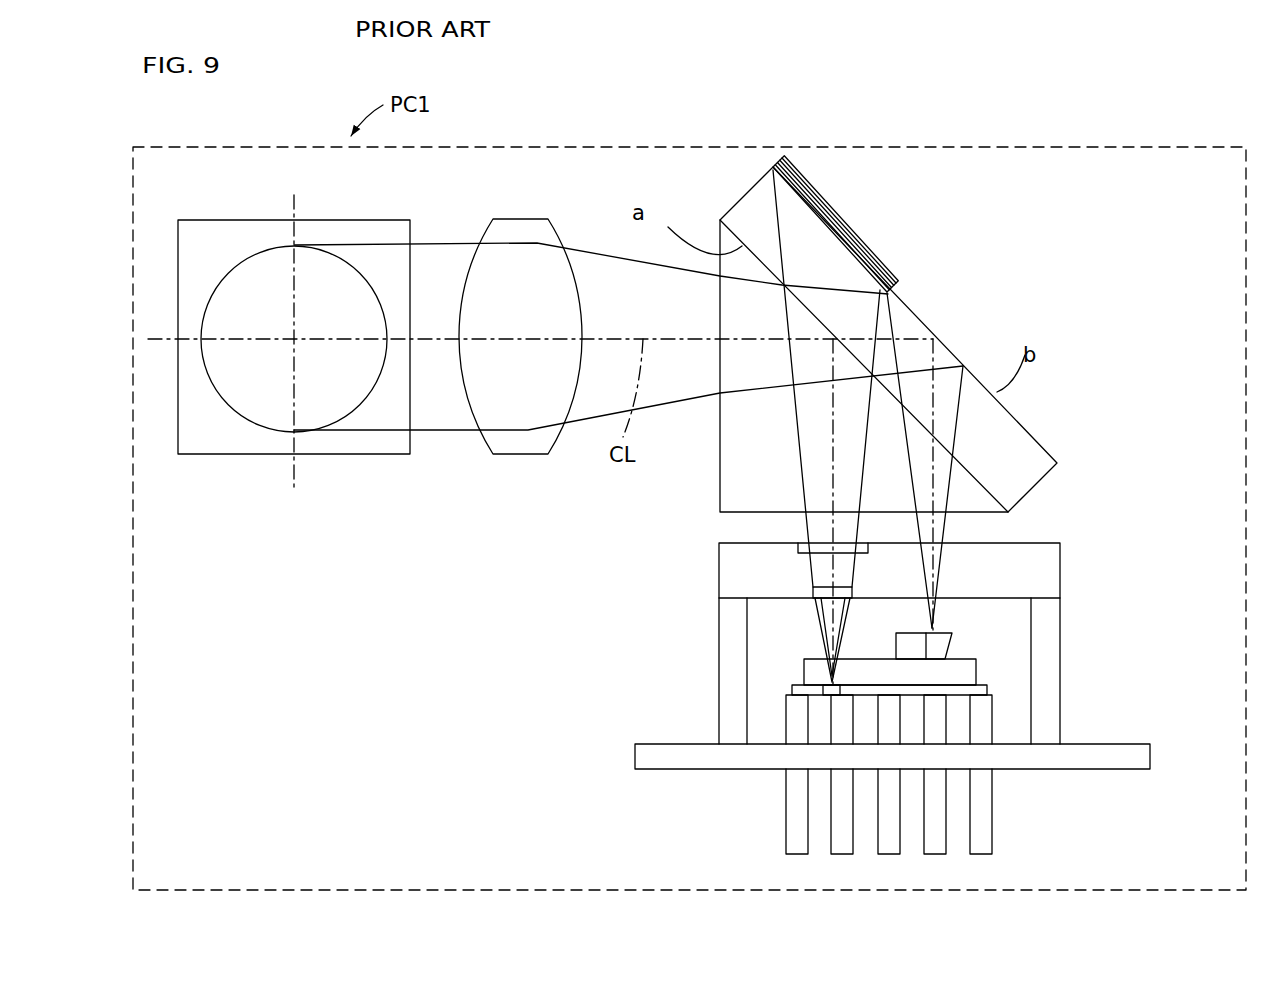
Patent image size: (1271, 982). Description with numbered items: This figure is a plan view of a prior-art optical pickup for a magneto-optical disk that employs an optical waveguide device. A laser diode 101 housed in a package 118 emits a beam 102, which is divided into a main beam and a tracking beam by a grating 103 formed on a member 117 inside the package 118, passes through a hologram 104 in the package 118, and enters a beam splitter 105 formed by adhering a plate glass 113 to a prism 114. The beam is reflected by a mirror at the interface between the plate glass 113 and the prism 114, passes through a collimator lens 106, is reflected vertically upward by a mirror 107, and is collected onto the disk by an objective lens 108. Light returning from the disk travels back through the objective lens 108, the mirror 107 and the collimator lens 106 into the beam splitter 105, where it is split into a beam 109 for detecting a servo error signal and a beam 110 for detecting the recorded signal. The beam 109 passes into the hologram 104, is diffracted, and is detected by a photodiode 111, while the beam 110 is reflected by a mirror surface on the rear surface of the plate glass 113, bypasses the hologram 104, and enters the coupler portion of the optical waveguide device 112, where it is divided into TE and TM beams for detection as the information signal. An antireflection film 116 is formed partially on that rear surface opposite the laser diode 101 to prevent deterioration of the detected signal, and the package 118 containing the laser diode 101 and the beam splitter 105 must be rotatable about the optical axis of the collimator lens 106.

The laser diode 101 is at (823, 697).
The beam 102 is at (803, 660).
The grating 103 is at (813, 598).
The hologram 104 is at (800, 548).
The beam splitter 105 is at (1056, 232).
The collimator lens 106 is at (524, 218).
The mirror 107 is at (237, 457).
The objective lens 108 is at (258, 250).
The beam for detecting a servo error signal 109 is at (853, 614).
The beam for detecting the recorded signal 110 is at (943, 563).
The photodiode 111 is at (962, 672).
The optical waveguide device 112 is at (959, 643).
The plate glass 113 is at (1020, 447).
The prism 114 is at (740, 468).
The antireflection film 116 is at (835, 207).
The member 117 is at (719, 573).
The package 118 is at (1133, 554).